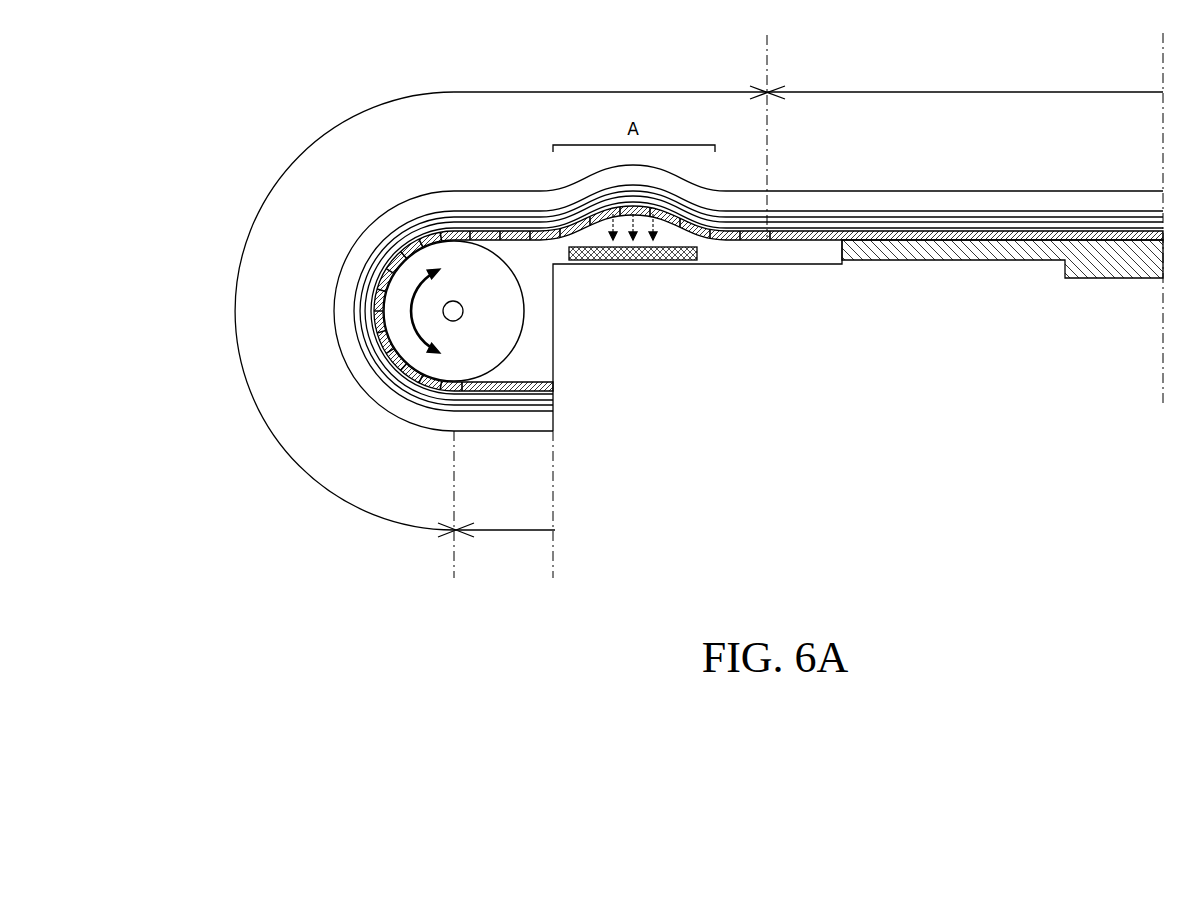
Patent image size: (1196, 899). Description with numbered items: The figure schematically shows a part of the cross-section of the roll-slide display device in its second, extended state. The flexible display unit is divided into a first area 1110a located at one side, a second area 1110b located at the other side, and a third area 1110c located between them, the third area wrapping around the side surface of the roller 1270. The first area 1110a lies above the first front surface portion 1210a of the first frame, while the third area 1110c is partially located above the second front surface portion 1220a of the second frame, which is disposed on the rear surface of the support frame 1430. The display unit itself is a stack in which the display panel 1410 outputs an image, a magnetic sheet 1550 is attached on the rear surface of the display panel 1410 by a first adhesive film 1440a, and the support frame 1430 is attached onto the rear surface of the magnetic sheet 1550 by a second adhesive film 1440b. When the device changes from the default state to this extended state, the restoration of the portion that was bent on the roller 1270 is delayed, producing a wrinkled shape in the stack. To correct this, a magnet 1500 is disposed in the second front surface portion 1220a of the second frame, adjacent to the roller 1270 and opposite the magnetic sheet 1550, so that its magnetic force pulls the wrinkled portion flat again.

The first area 1110a is at (808, 220).
The second area 1110b is at (496, 504).
The third area 1110c is at (309, 311).
The display panel 1410 is at (1068, 193).
The support frame 1430 is at (467, 235).
The first adhesive film 1440a is at (985, 211).
The second adhesive film 1440b is at (812, 228).
The magnetic sheet 1550 is at (890, 222).
The magnet 1500 is at (625, 262).
The first front surface portion of the first frame 1210a is at (778, 243).
The second front surface portion of the second frame 1220a is at (832, 255).
The roller 1270 is at (495, 346).